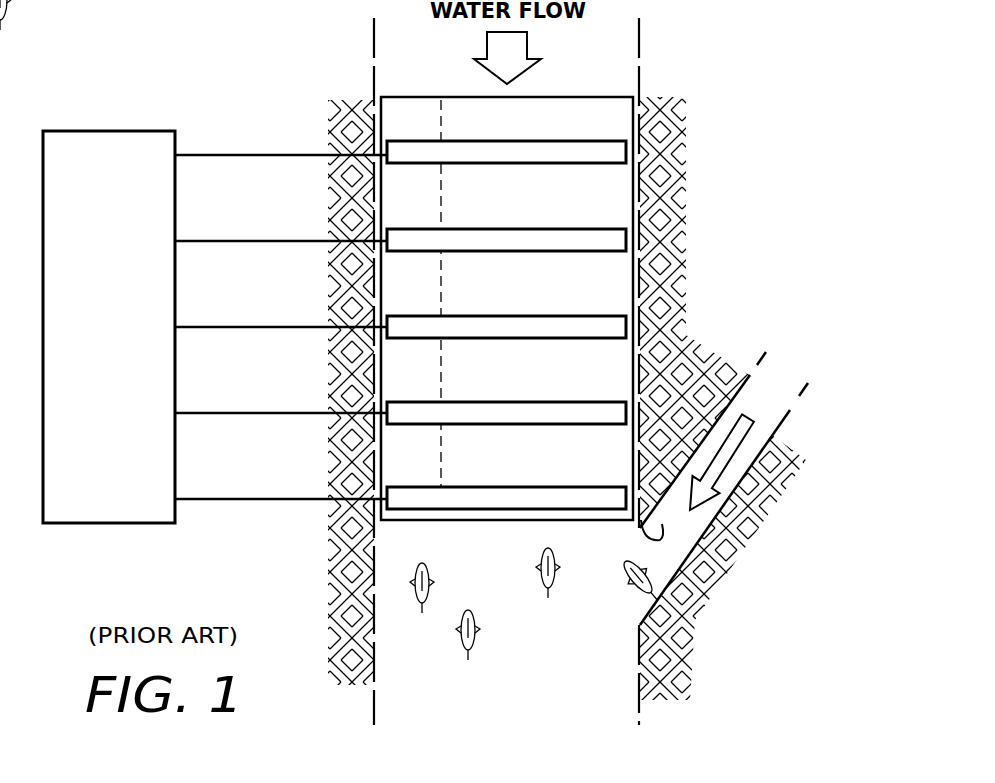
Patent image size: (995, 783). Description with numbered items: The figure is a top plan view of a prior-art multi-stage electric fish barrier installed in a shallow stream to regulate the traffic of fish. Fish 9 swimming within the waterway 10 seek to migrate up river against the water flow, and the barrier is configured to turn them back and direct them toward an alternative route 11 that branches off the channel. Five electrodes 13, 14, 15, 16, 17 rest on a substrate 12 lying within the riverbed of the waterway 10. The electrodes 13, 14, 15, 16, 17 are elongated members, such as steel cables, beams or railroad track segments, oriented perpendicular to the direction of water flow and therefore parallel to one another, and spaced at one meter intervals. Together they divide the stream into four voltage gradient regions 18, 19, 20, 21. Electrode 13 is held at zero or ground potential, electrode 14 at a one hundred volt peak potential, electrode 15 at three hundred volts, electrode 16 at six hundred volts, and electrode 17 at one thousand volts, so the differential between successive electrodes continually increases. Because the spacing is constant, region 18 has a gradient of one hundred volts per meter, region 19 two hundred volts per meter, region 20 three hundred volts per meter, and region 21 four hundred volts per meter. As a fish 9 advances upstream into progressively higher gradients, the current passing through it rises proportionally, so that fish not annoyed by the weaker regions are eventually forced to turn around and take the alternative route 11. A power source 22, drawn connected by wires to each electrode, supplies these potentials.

The fish 9 is at (468, 612).
The waterway 10 is at (506, 371).
The alternative route 11 is at (657, 530).
The substrate 12 is at (400, 522).
The electrode 13 is at (399, 493).
The electrode 14 is at (399, 408).
The electrode 15 is at (399, 323).
The electrode 16 is at (399, 237).
The electrode 17 is at (399, 150).
The voltage gradient region 18 is at (548, 460).
The voltage gradient region 19 is at (548, 375).
The voltage gradient region 20 is at (548, 289).
The voltage gradient region 21 is at (548, 203).
The power source 22 is at (127, 148).